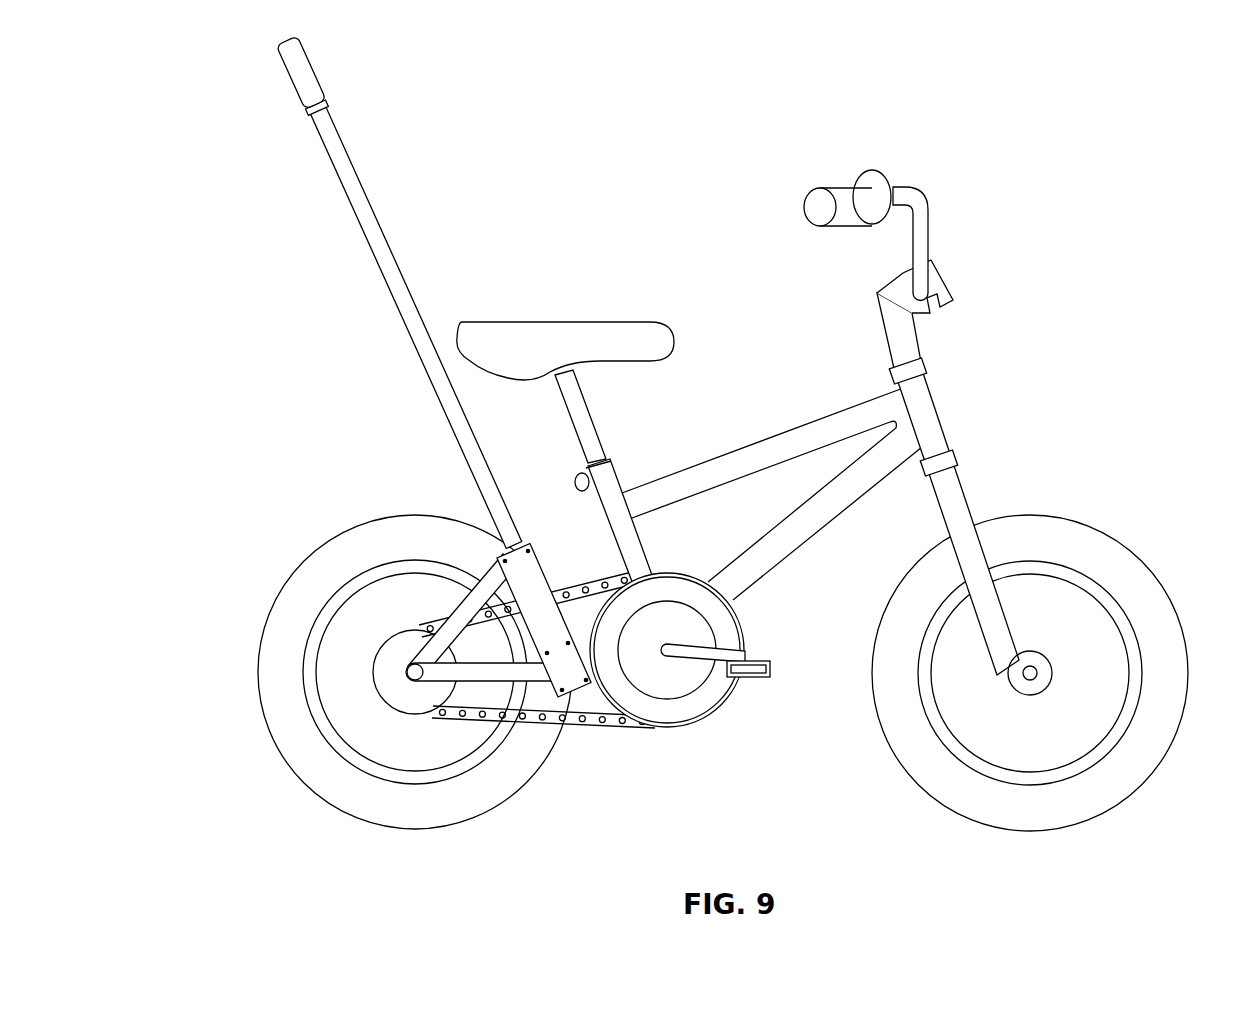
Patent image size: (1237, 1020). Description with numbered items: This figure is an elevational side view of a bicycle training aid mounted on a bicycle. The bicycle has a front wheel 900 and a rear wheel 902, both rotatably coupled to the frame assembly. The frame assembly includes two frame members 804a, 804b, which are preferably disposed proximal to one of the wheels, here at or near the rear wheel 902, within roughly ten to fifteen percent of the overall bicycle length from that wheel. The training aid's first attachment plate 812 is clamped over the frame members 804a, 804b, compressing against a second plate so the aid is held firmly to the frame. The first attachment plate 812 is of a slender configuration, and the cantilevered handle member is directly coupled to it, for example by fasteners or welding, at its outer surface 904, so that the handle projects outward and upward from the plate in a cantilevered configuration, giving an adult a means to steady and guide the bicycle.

The front wheel 900 is at (1092, 545).
The rear wheel 902 is at (340, 548).
The first attachment plate 812 is at (497, 557).
The frame member 804a is at (558, 542).
The frame member 804b is at (473, 673).
The outer surface 904 is at (524, 622).